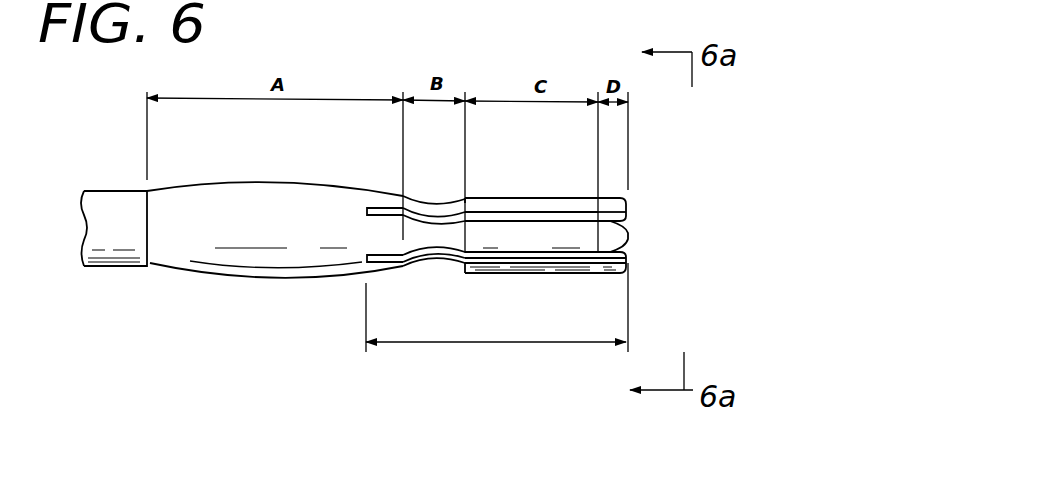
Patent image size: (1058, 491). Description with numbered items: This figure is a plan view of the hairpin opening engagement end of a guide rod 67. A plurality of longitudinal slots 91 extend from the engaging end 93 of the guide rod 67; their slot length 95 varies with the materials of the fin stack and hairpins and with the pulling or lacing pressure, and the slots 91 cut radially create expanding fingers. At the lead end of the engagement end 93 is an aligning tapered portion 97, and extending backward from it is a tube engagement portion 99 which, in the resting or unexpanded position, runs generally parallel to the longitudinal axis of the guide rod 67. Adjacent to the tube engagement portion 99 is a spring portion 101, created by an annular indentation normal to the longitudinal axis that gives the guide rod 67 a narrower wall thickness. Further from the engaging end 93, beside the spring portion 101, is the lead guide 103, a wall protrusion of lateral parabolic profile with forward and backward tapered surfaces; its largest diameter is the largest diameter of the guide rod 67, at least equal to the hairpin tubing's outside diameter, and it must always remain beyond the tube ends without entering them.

The guide rod 67 is at (133, 246).
The longitudinal slots 91 is at (628, 242).
The engaging end 93 is at (647, 191).
The slot length 95 is at (497, 366).
The aligning tapered portion 97 is at (615, 199).
The tube engagement portion 99 is at (517, 198).
The spring portion 101 is at (433, 206).
The lead guide 103 is at (278, 184).